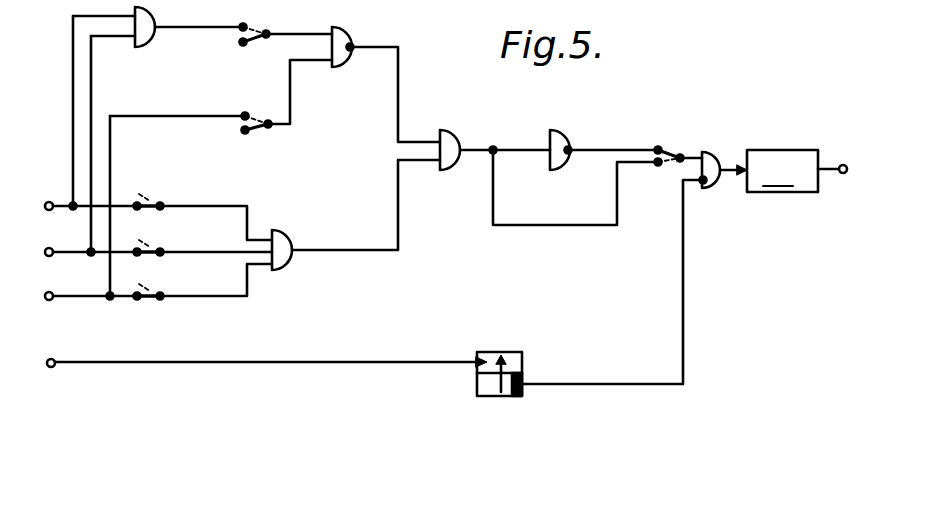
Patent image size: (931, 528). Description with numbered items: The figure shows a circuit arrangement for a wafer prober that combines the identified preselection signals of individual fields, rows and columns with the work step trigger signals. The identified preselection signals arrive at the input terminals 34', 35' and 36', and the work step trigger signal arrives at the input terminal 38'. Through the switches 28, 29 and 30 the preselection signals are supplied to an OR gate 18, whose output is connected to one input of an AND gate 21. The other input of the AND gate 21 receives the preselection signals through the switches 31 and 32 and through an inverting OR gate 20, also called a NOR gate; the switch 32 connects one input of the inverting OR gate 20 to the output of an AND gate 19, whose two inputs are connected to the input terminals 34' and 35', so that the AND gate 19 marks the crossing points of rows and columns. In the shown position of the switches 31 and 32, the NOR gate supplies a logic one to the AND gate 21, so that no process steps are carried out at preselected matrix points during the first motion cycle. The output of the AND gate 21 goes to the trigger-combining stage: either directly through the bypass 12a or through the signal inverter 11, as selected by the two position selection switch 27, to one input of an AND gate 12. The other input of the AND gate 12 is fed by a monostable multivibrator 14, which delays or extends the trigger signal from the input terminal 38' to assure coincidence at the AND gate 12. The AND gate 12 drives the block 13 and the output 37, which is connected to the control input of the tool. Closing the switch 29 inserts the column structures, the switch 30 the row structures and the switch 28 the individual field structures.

The signal inverter 11 is at (562, 144).
The AND gate 12 is at (712, 153).
The bypass 12a is at (557, 225).
The output block 13 is at (793, 171).
The monostable multivibrator 14 is at (519, 352).
The OR gate 18 is at (289, 237).
The AND gate 19 is at (148, 46).
The inverting OR gate 20 is at (349, 43).
The AND gate 21 is at (457, 141).
The selection switch 27 is at (669, 151).
The switch 28 is at (155, 293).
The switch 29 is at (155, 249).
The switch 30 is at (148, 203).
The switch 31 is at (249, 132).
The switch 32 is at (248, 44).
The input terminal 34' is at (91, 270).
The input terminal 35' is at (91, 224).
The input terminal 36' is at (91, 313).
The output 37 is at (840, 164).
The input terminal 38' is at (267, 381).